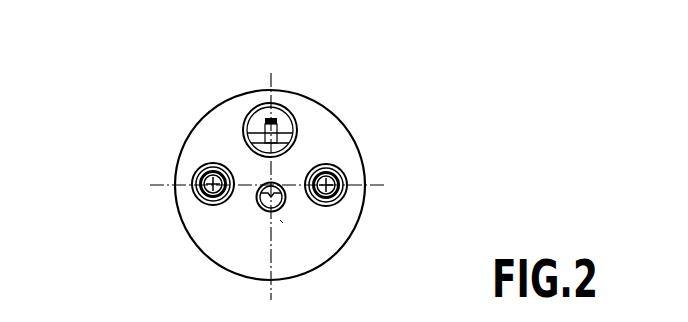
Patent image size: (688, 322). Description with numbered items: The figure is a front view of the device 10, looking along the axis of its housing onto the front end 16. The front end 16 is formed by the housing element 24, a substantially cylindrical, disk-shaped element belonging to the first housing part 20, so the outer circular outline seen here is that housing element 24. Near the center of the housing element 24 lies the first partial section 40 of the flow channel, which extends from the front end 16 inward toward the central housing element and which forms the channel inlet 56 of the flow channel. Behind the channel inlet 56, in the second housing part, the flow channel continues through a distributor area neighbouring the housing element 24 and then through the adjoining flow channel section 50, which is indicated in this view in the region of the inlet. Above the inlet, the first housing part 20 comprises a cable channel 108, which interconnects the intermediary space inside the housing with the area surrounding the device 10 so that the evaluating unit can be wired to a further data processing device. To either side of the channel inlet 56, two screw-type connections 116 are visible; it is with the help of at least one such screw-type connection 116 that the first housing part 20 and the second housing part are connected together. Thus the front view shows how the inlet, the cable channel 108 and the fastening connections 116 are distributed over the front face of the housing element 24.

The device 10 is at (120, 120).
The first housing part 20 is at (362, 108).
The housing element 24 is at (350, 152).
The front end 16 is at (332, 229).
The cable channel 108 is at (258, 125).
The screw-type connection 116 is at (197, 197).
The first partial section 40 is at (263, 212).
The flow channel section 50 is at (257, 208).
The channel inlet 56 is at (286, 230).